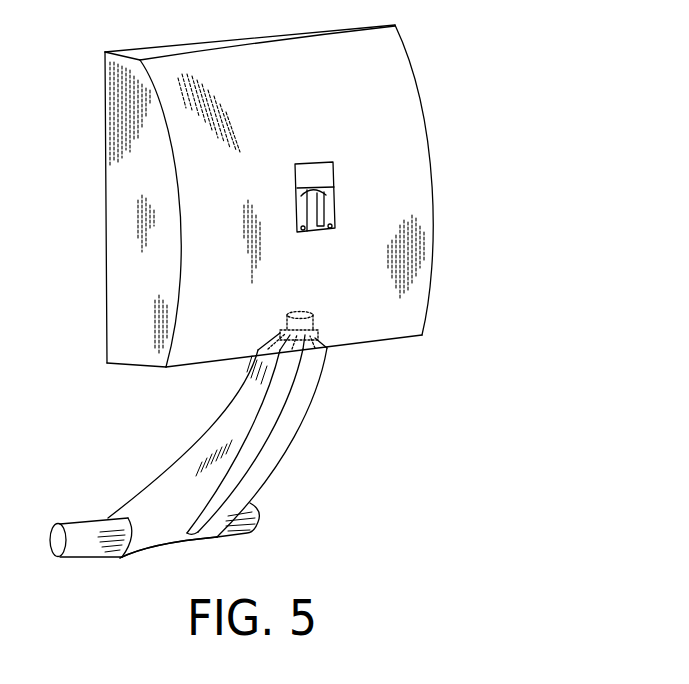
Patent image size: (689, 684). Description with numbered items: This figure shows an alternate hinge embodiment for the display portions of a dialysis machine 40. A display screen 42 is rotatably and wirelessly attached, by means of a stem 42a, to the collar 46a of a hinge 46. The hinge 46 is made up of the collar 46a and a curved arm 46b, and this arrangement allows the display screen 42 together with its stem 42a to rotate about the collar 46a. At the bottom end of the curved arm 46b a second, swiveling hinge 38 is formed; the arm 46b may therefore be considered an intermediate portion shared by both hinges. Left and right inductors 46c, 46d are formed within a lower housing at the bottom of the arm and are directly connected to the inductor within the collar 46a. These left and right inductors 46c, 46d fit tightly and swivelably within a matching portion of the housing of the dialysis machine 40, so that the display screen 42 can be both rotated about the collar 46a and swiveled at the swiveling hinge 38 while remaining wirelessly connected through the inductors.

The swiveling hinge 38 is at (243, 553).
The dialysis machine 40 is at (334, 302).
The display screen 42 is at (423, 185).
The stem 42a is at (315, 318).
The hinge 46 is at (257, 445).
The collar 46a is at (318, 333).
The curved arm 46b is at (213, 437).
The left inductor 46c is at (83, 523).
The right inductor 46d is at (260, 520).